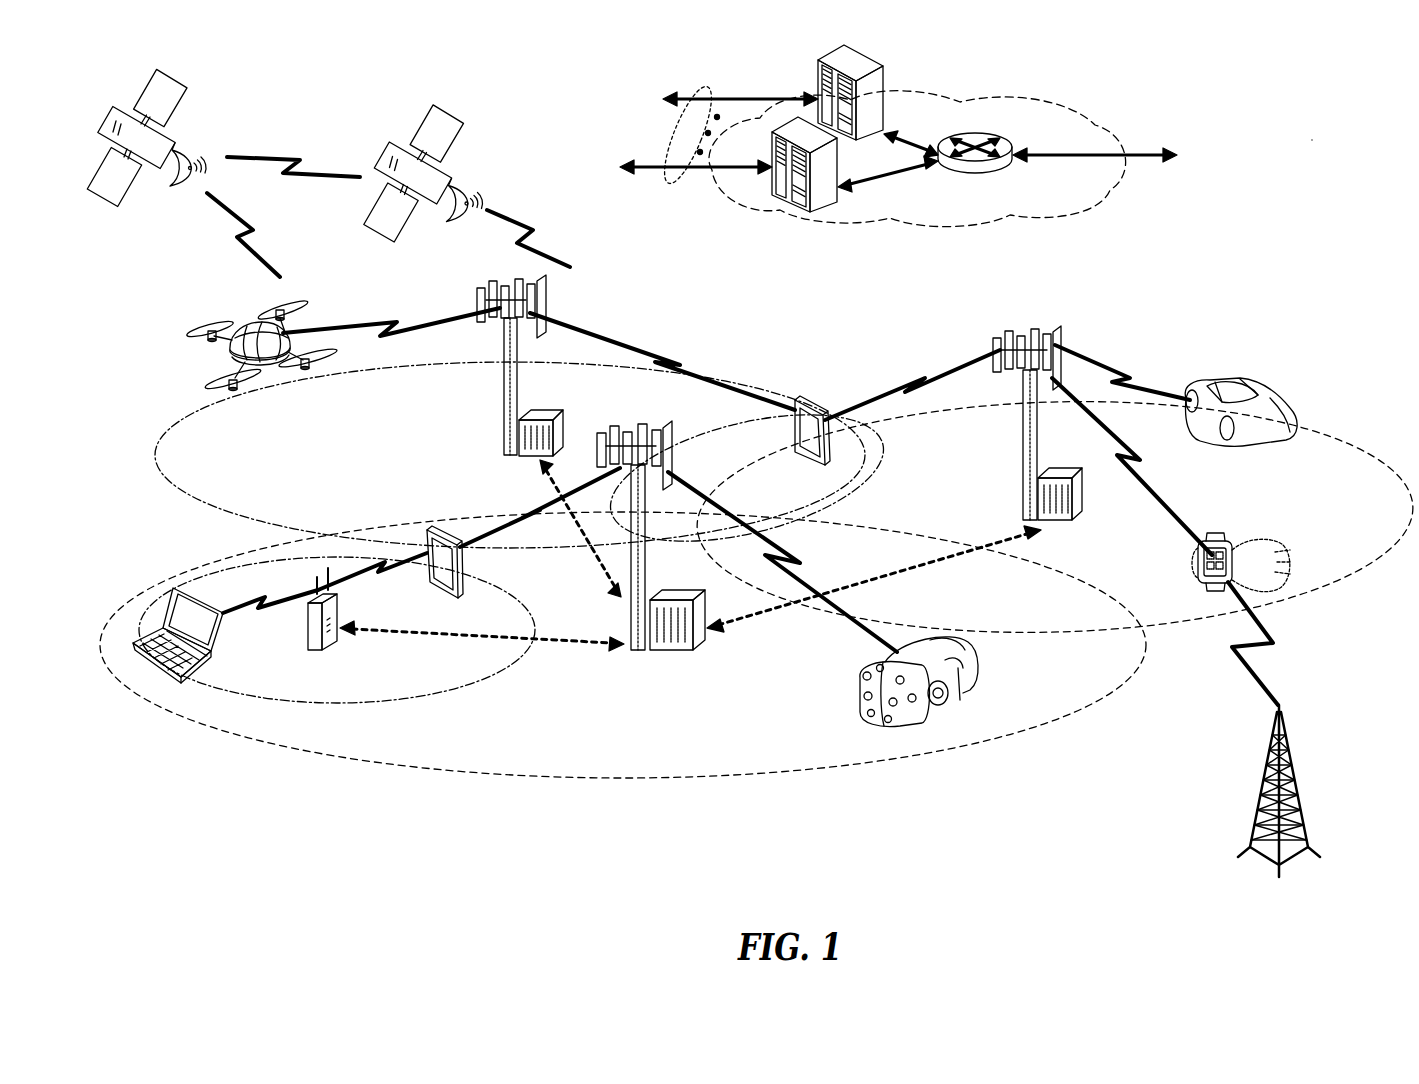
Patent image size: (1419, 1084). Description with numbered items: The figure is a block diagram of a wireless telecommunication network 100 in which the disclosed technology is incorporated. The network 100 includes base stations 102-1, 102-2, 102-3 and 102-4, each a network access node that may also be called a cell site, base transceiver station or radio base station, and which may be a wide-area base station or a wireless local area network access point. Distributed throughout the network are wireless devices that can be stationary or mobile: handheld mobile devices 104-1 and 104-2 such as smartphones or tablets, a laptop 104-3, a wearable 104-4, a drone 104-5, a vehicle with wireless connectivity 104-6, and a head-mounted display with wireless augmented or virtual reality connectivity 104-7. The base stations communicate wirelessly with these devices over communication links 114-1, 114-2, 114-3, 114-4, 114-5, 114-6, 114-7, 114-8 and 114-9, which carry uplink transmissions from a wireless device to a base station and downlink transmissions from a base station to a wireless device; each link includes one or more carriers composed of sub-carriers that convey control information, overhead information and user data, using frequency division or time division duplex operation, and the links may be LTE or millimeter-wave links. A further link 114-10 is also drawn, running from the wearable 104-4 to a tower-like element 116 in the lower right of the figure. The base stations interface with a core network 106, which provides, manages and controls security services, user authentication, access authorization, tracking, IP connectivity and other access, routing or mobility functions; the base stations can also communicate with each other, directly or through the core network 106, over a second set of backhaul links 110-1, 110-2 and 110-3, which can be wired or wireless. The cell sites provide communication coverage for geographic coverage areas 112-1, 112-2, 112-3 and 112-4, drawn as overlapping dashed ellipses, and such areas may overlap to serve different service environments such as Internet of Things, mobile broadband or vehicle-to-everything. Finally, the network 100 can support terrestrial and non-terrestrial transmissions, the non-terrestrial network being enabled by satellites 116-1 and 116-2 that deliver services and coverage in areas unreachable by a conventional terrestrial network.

The wireless telecommunication network 100 is at (1314, 138).
The base station 102-1 is at (630, 653).
The base station 102-2 is at (502, 405).
The base station 102-3 is at (1017, 440).
The base station 102-4 is at (307, 640).
The handheld mobile device 104-1 is at (460, 573).
The handheld mobile device 104-2 is at (790, 435).
The laptop 104-3 is at (157, 680).
The wearable 104-4 is at (1223, 540).
The drone 104-5 is at (268, 368).
The vehicle with wireless connectivity 104-6 is at (1260, 397).
The head-mounted display 104-7 is at (973, 677).
The core network 106 is at (1025, 226).
The backhaul link 110-1 is at (377, 635).
The backhaul link 110-2 is at (940, 560).
The backhaul link 110-3 is at (597, 560).
The geographic coverage area 112-1 is at (565, 782).
The geographic coverage area 112-2 is at (443, 690).
The geographic coverage area 112-3 is at (217, 510).
The geographic coverage area 112-4 is at (1313, 435).
The communication link 114-1 is at (797, 562).
The communication link 114-2 is at (523, 513).
The communication link 114-3 is at (233, 607).
The communication link 114-4 is at (383, 570).
The communication link 114-5 is at (383, 322).
The communication link 114-6 is at (913, 380).
The communication link 114-7 is at (672, 357).
The communication link 114-8 is at (1145, 478).
The communication link 114-9 is at (1113, 370).
The wireless link 114-10 is at (1255, 645).
The ground station tower 116 is at (1293, 772).
The satellite 116-1 is at (196, 148).
The satellite 116-2 is at (470, 185).